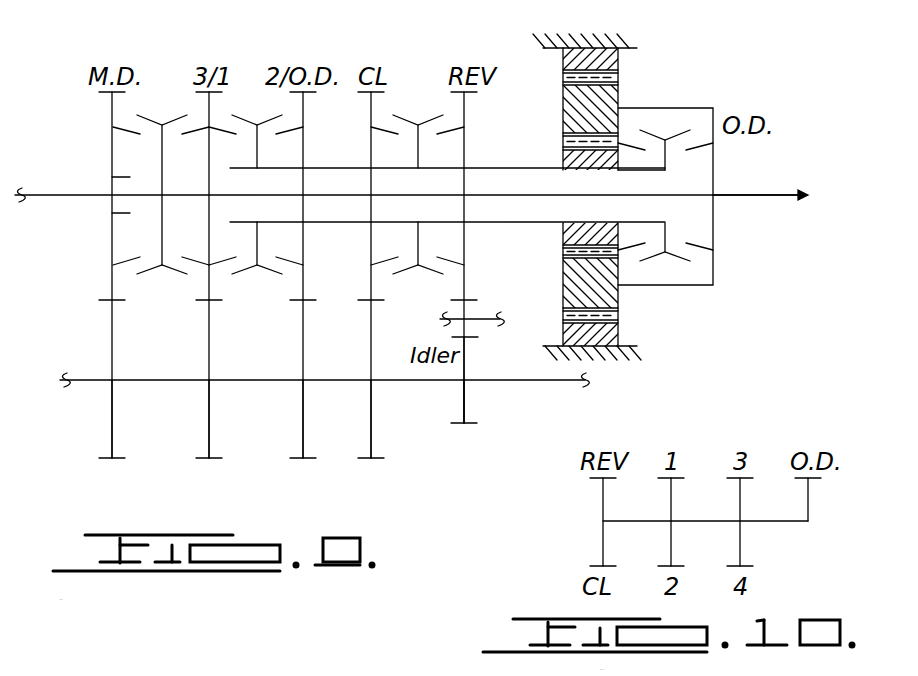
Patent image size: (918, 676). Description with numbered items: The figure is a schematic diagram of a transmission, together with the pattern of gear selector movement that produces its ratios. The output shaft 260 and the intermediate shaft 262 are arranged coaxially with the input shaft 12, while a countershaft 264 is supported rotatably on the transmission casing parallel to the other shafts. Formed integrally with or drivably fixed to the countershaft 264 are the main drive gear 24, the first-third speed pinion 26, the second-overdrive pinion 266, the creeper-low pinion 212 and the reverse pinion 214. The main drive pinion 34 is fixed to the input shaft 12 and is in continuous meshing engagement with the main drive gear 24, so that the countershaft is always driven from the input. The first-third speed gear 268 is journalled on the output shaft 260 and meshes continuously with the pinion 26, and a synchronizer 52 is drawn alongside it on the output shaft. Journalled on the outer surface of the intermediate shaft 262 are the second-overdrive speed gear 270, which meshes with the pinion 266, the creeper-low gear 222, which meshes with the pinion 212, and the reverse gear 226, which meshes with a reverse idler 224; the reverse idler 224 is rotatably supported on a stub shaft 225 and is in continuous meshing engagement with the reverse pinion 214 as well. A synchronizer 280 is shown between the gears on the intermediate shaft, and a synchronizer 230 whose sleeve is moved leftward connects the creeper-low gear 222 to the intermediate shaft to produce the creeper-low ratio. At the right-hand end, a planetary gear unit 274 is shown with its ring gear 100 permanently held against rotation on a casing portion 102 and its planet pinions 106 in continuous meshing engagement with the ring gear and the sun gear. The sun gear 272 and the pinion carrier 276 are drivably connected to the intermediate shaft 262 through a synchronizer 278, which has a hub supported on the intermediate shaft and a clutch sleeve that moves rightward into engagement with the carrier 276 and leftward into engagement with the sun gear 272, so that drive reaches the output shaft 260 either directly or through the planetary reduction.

The input shaft 12 is at (45, 193).
The main drive pinion 34 is at (112, 104).
The first-third speed gear 268 is at (209, 105).
The second-overdrive speed gear 270 is at (303, 155).
The creeper-low gear 222 is at (371, 101).
The reverse gear 226 is at (464, 135).
The first synchronizer 52 is at (166, 278).
The second synchronizer 280 is at (257, 279).
The synchronizer 230 is at (408, 276).
The planet pinions 106 is at (608, 100).
The ring gear 100 is at (605, 62).
The casing portion 102 is at (615, 40).
The planetary gear unit 274 is at (572, 28).
The sun gear 272 is at (563, 155).
The pinion carrier 276 is at (713, 237).
The intermediate shaft 262 is at (493, 225).
The synchronizer 278 is at (669, 262).
The output shaft 260 is at (767, 199).
The stub shaft 225 is at (450, 317).
The reverse idler 224 is at (468, 327).
The countershaft 264 is at (78, 375).
The main drive gear 24 is at (112, 425).
The first-third speed pinion 26 is at (209, 432).
The second-overdrive pinion 266 is at (303, 432).
The creeper-low pinion 212 is at (374, 448).
The reverse pinion 214 is at (466, 410).